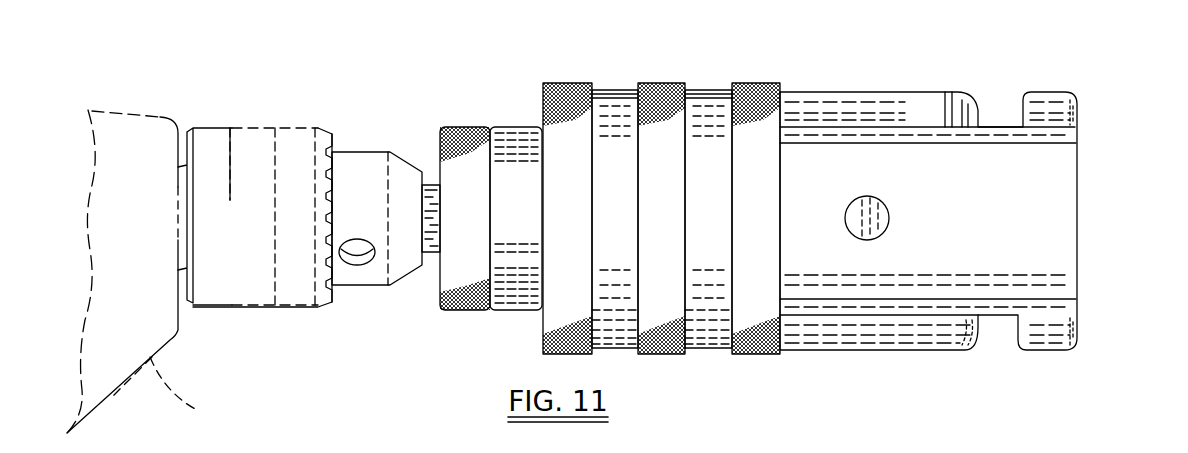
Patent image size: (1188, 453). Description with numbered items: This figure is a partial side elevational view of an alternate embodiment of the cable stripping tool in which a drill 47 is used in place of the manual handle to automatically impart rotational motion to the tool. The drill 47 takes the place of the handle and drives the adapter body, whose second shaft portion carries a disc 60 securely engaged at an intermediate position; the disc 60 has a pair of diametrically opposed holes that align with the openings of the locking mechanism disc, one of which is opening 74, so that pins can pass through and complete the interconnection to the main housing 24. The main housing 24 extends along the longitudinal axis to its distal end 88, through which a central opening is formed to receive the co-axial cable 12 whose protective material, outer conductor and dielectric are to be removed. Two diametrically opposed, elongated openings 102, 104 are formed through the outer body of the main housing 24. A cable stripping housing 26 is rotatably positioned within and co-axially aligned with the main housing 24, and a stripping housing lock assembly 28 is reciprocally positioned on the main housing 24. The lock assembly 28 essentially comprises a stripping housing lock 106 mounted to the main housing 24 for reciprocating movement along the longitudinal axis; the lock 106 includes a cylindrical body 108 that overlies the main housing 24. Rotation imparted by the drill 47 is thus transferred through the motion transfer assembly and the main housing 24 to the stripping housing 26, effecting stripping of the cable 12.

The co-axial cable 12 is at (422, 444).
The main housing 24 is at (1077, 91).
The cable stripping housing 26 is at (973, 346).
The stripping housing lock assembly 28 is at (661, 236).
The drill 47 is at (199, 410).
The disc 60 is at (523, 283).
The opening 74 is at (445, 270).
The distal end 88 is at (971, 236).
The elongated opening 102 is at (1001, 108).
The elongated opening 104 is at (1004, 331).
The stripping housing lock 106 is at (607, 113).
The cylindrical body 108 is at (678, 226).